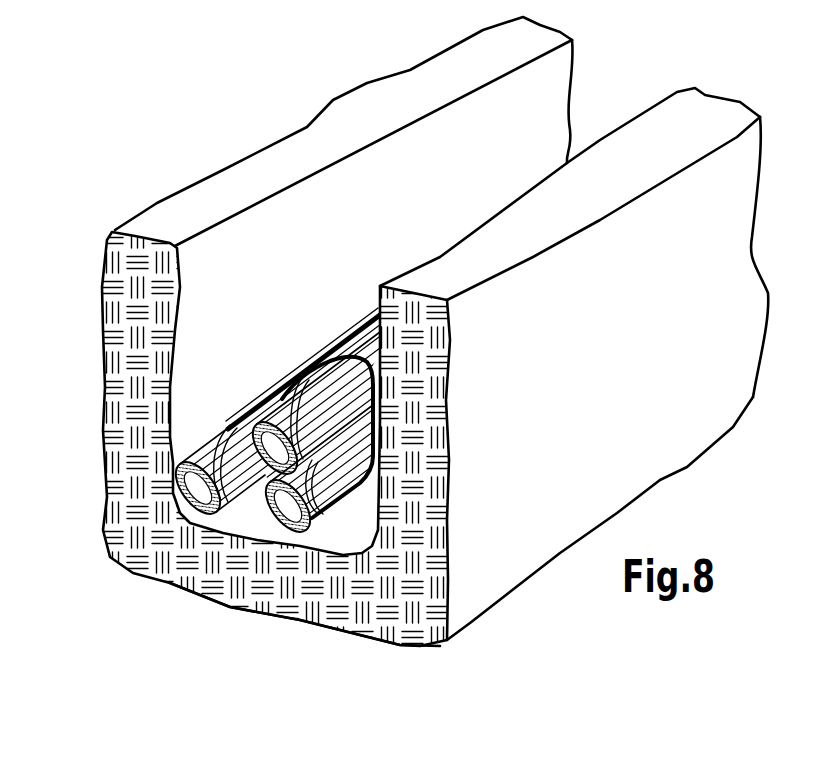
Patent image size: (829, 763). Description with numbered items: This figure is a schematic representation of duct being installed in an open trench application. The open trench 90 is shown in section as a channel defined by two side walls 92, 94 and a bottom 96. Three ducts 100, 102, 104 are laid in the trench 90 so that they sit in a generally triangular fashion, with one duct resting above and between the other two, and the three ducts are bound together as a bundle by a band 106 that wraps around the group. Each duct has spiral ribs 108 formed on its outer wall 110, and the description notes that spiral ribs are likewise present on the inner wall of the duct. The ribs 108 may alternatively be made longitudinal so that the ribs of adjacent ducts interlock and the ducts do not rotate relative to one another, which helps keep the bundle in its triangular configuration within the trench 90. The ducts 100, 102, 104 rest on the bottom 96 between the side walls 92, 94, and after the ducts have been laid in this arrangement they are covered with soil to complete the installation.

The open trench 90 is at (200, 311).
The side wall 92 is at (207, 277).
The side wall 94 is at (395, 325).
The bottom 96 is at (250, 545).
The duct 100 is at (277, 433).
The duct 102 is at (207, 478).
The duct 104 is at (297, 530).
The band 106 is at (318, 354).
The spiral ribs 108 is at (284, 384).
The outer wall 110 is at (340, 398).